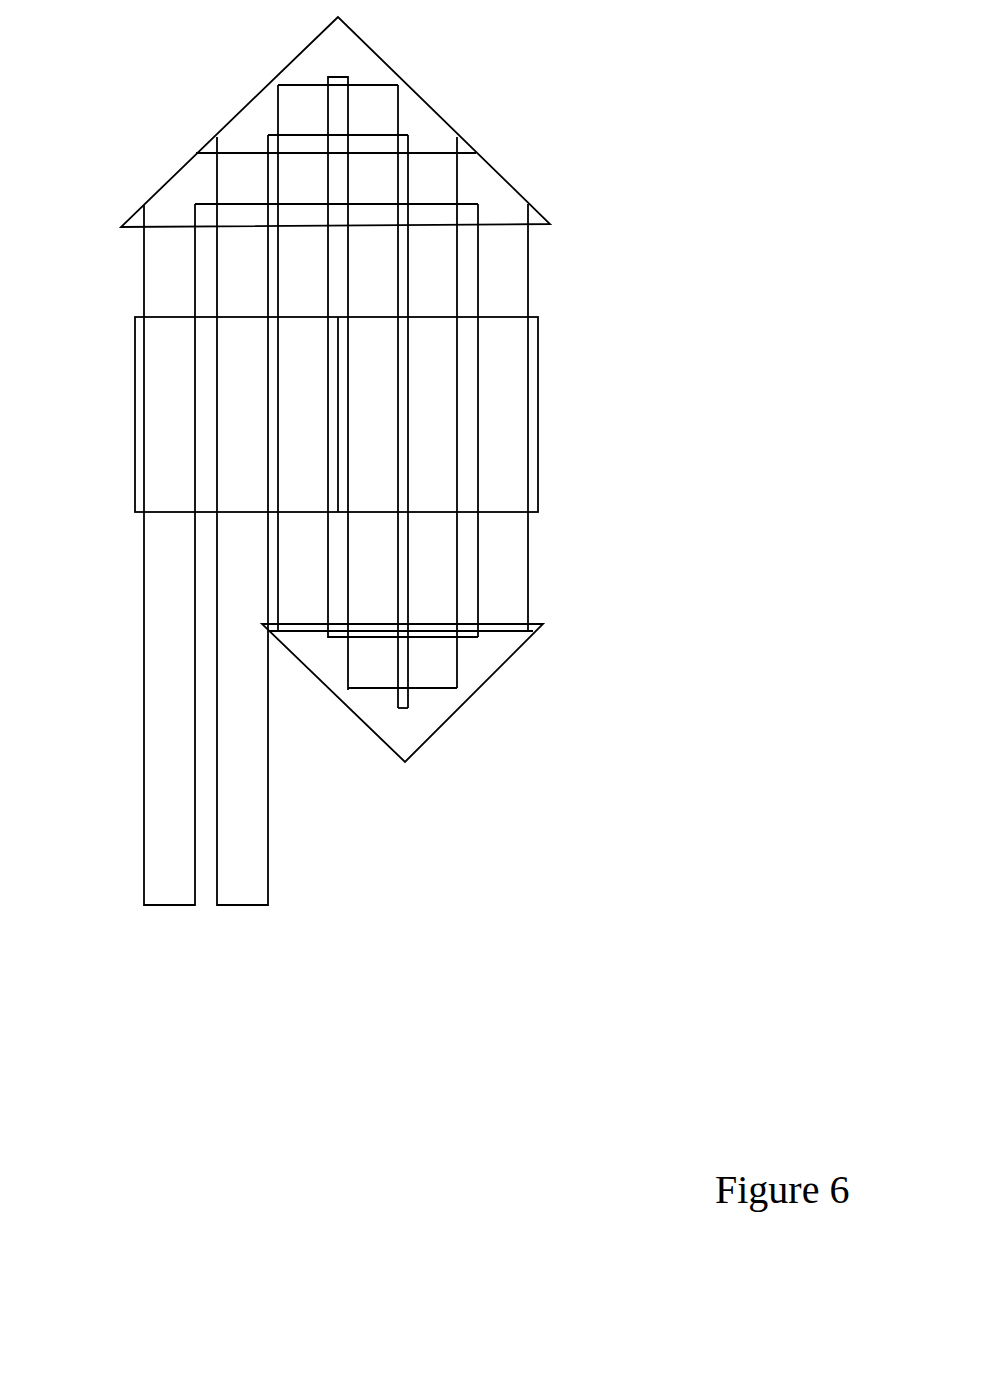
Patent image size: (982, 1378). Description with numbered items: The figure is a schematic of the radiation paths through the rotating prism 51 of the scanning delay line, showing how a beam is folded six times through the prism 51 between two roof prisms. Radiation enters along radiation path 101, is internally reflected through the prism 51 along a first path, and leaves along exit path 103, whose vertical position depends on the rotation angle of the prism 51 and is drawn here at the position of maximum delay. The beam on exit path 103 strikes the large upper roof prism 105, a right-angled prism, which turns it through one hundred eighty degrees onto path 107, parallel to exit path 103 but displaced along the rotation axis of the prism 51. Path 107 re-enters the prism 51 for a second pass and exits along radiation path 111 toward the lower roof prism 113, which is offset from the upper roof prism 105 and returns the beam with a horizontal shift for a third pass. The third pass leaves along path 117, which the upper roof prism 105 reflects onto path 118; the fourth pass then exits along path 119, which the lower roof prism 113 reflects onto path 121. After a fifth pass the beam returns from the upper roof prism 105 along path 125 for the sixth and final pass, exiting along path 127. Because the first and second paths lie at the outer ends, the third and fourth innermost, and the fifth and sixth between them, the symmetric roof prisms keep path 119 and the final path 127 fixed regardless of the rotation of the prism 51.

The prism 51 is at (130, 407).
The radiation path 101 is at (157, 713).
The exit path 103 is at (157, 285).
The roof prism 105 is at (448, 108).
The path 107 is at (517, 297).
The radiation path 111 is at (518, 537).
The lower roof prism 113 is at (490, 670).
The path 117 is at (298, 255).
The path 118 is at (368, 283).
The path 119 is at (542, 610).
The path 121 is at (435, 563).
The path 125 is at (242, 283).
The path 127 is at (331, 472).